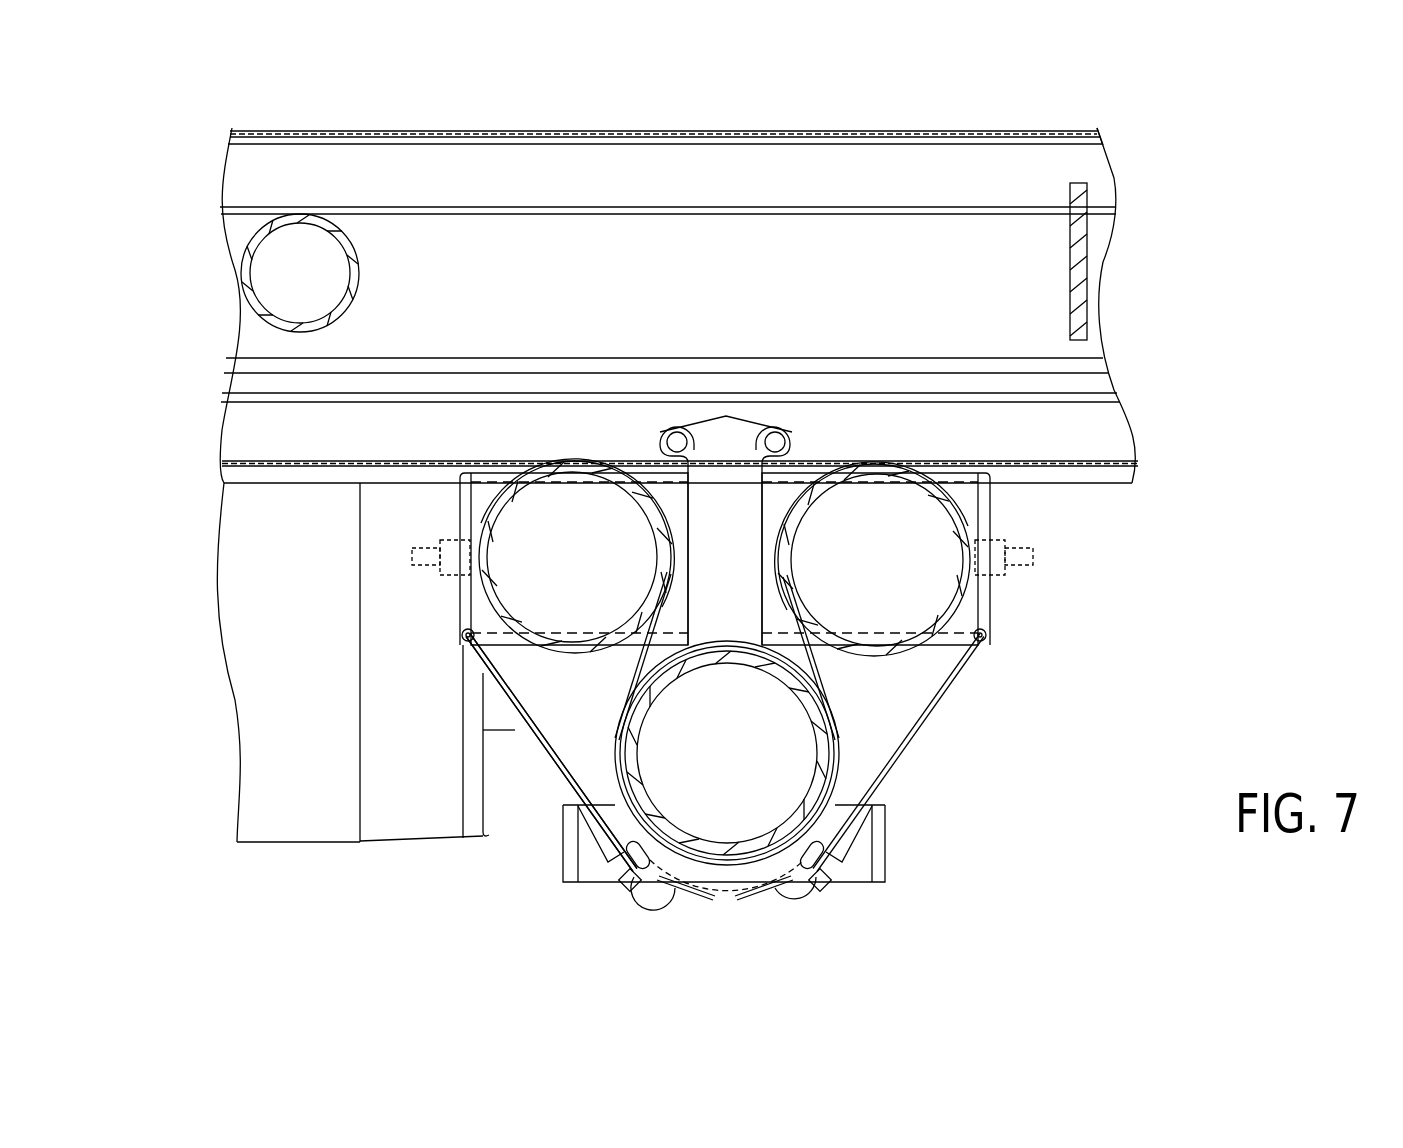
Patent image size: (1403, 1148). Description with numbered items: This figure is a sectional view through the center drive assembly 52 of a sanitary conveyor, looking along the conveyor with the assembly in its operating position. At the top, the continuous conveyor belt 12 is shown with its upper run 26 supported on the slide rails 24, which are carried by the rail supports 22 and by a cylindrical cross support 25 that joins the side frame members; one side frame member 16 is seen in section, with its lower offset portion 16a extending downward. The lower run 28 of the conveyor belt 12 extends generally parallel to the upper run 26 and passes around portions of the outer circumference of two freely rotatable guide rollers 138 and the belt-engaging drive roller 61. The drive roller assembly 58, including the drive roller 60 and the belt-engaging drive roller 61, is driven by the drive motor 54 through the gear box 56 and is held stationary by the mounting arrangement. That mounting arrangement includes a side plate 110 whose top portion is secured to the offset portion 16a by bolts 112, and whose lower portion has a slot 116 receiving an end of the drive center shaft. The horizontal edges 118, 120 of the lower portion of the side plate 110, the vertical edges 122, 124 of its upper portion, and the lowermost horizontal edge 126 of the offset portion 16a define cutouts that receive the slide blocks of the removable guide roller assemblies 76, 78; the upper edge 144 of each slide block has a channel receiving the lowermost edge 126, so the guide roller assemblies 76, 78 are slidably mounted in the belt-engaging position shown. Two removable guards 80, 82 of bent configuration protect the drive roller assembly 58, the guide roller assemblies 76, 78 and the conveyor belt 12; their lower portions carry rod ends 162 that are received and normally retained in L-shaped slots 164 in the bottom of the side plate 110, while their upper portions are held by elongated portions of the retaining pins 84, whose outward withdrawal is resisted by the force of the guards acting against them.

The continuous conveyor belt 12 is at (658, 130).
The side frame member 16 is at (714, 285).
The lower offset portion of side frame member 16a is at (1118, 440).
The rail support 22 is at (1070, 262).
The slide rail 24 is at (1085, 168).
The cylindrical cross support 25 is at (357, 288).
The upper run 26 is at (790, 130).
The lower run 28 is at (1097, 478).
The center drive assembly 52 is at (1052, 728).
The drive motor 54 is at (337, 848).
The gear box 56 is at (880, 852).
The drive roller assembly 58 is at (721, 640).
The drive roller 60 is at (775, 680).
The belt-engaging drive roller 61 is at (820, 740).
The guide roller assembly 76 is at (570, 652).
The guide roller assembly 78 is at (878, 656).
The removable guard 80 is at (555, 762).
The removable guard 82 is at (902, 756).
The retaining pin 84 is at (462, 642).
The side plate 110 is at (915, 725).
The bolt 112 is at (672, 440).
The slot 116 is at (728, 898).
The horizontal edge 118 is at (578, 632).
The horizontal edge 120 is at (960, 628).
The vertical edge 122 is at (690, 518).
The vertical edge 124 is at (760, 556).
The lowermost horizontal edge 126 is at (1022, 490).
The guide roller 138 is at (488, 520).
The upper edge of slide block 144 is at (525, 472).
The rod end 162 is at (637, 902).
The L-shaped slot 164 is at (620, 870).